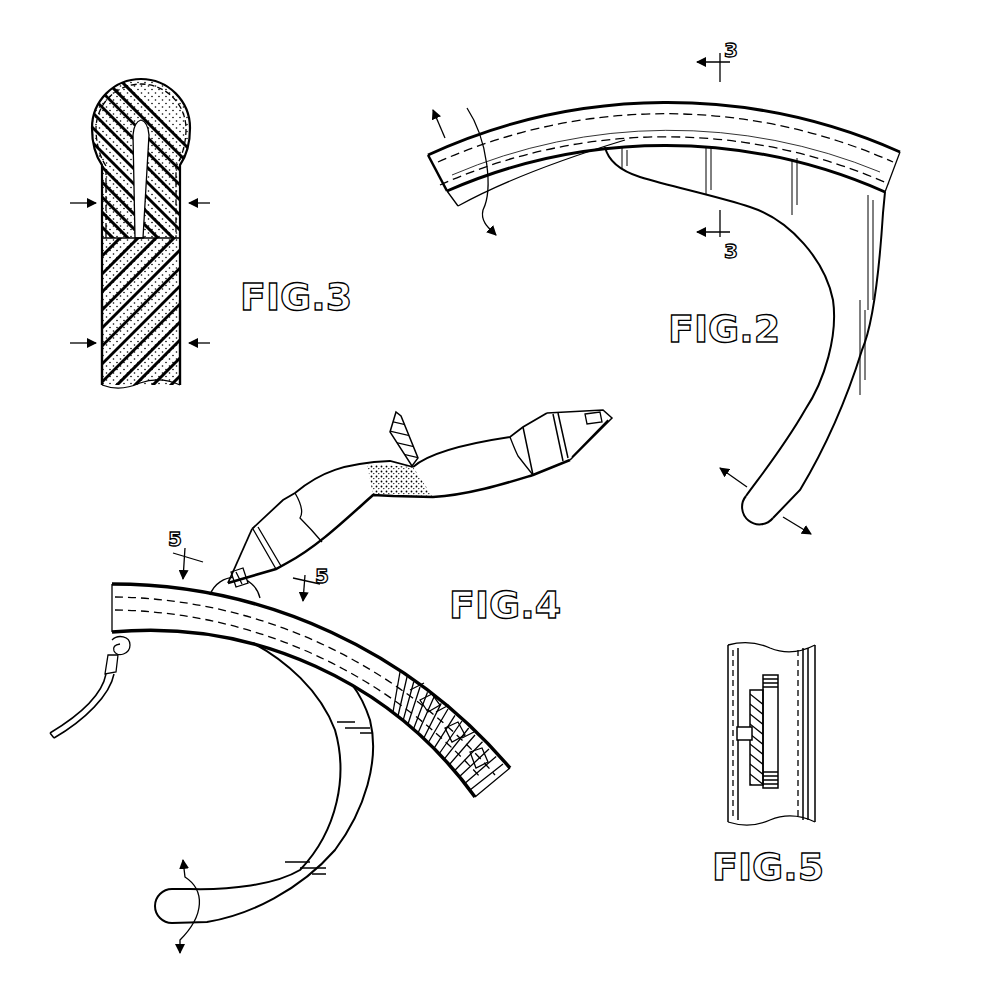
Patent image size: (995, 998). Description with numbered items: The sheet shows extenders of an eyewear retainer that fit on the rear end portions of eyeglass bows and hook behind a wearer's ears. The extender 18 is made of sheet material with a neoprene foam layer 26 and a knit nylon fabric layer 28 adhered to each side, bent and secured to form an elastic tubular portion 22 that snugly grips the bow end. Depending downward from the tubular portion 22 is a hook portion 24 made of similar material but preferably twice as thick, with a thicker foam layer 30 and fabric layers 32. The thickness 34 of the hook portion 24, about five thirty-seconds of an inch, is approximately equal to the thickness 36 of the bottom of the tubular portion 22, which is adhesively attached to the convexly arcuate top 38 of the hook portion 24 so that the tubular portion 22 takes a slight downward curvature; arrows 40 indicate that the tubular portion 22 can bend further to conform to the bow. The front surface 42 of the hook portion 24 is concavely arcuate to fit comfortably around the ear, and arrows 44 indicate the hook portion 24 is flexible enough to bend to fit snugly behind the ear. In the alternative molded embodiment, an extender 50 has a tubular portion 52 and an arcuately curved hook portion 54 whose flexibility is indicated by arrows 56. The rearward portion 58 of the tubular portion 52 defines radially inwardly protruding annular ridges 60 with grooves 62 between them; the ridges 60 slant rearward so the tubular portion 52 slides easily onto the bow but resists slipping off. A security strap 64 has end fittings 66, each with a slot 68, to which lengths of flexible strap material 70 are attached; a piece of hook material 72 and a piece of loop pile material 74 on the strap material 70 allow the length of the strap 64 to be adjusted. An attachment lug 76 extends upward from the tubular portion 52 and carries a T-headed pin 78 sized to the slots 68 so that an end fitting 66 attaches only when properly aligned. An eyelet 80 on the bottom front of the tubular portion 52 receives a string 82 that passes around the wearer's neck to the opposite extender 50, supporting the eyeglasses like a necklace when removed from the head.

In FIG. 2, the extender 18 is at (867, 137).
In FIG. 3, the elastic tubular portion 22 is at (190, 132).
In FIG. 2, the elastic tubular portion 22 is at (795, 113).
In FIG. 5, the elastic tubular portion 22 is at (804, 775).
In FIG. 3, the hook portion 24 is at (183, 332).
In FIG. 2, the hook portion 24 is at (874, 336).
In FIG. 3, the neoprene foam layer 26 is at (182, 198).
In FIG. 3, the fabric layer 28 is at (183, 185).
In FIG. 3, the thicker foam layer 30 is at (178, 290).
In FIG. 3, the fabric layers 32 is at (100, 362).
In FIG. 3, the thickness of the hook portion 34 is at (193, 346).
In FIG. 3, the thickness of the bottom of the tubular portion 36 is at (192, 206).
In FIG. 2, the top of the hook portion 38 is at (855, 148).
In FIG. 2, the arrows 40 is at (440, 127).
In FIG. 2, the front surface of the hook portion 42 is at (830, 336).
In FIG. 2, the arrows 44 is at (790, 523).
In FIG. 4, the extender 50 is at (390, 654).
In FIG. 4, the tubular portion 52 is at (335, 636).
In FIG. 4, the arcuately curved hook portion 54 is at (350, 808).
In FIG. 4, the arrows 56 is at (180, 876).
In FIG. 4, the rearward portion of the tubular portion 58 is at (500, 764).
In FIG. 4, the annular ridges 60 is at (500, 776).
In FIG. 4, the grooves 62 is at (470, 737).
In FIG. 4, the security strap 64 is at (360, 513).
In FIG. 4, the end fittings 66 is at (585, 437).
In FIG. 5, the end fittings 66 is at (778, 718).
In FIG. 4, the slot 68 is at (597, 408).
In FIG. 4, the flexible strap material 70 is at (338, 480).
In FIG. 4, the hook material 72 is at (423, 498).
In FIG. 4, the loop pile material 74 is at (390, 423).
In FIG. 4, the attachment lug 76 is at (260, 620).
In FIG. 5, the attachment lug 76 is at (750, 702).
In FIG. 4, the T-headed pin 78 is at (232, 572).
In FIG. 5, the T-headed pin 78 is at (737, 744).
In FIG. 4, the eyelet 80 is at (128, 636).
In FIG. 4, the string 82 is at (84, 724).